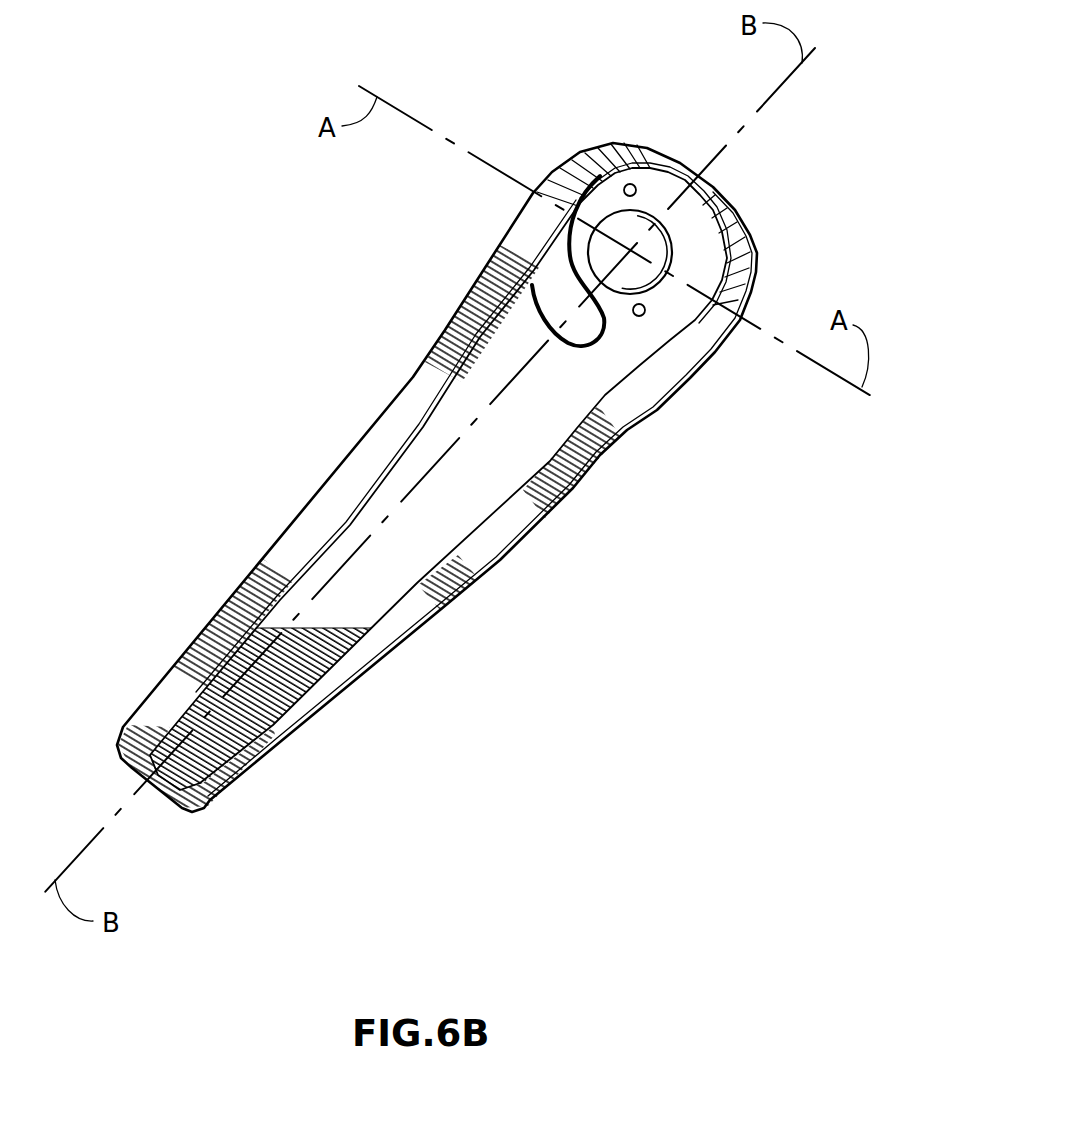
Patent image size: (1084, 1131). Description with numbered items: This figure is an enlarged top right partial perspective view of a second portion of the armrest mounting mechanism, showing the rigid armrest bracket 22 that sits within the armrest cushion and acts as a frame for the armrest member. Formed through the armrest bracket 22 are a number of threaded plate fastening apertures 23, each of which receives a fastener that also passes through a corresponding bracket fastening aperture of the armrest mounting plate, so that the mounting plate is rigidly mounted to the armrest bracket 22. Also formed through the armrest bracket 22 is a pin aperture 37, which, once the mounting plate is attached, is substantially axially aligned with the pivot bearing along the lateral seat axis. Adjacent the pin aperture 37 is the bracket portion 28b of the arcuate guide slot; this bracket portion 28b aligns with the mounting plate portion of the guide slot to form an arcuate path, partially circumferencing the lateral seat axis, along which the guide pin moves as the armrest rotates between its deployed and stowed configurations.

The armrest bracket 22 is at (282, 670).
The plate fastening apertures 23 is at (624, 184).
The bracket portion of the guide slot 28b is at (545, 268).
The pin aperture 37 is at (672, 242).